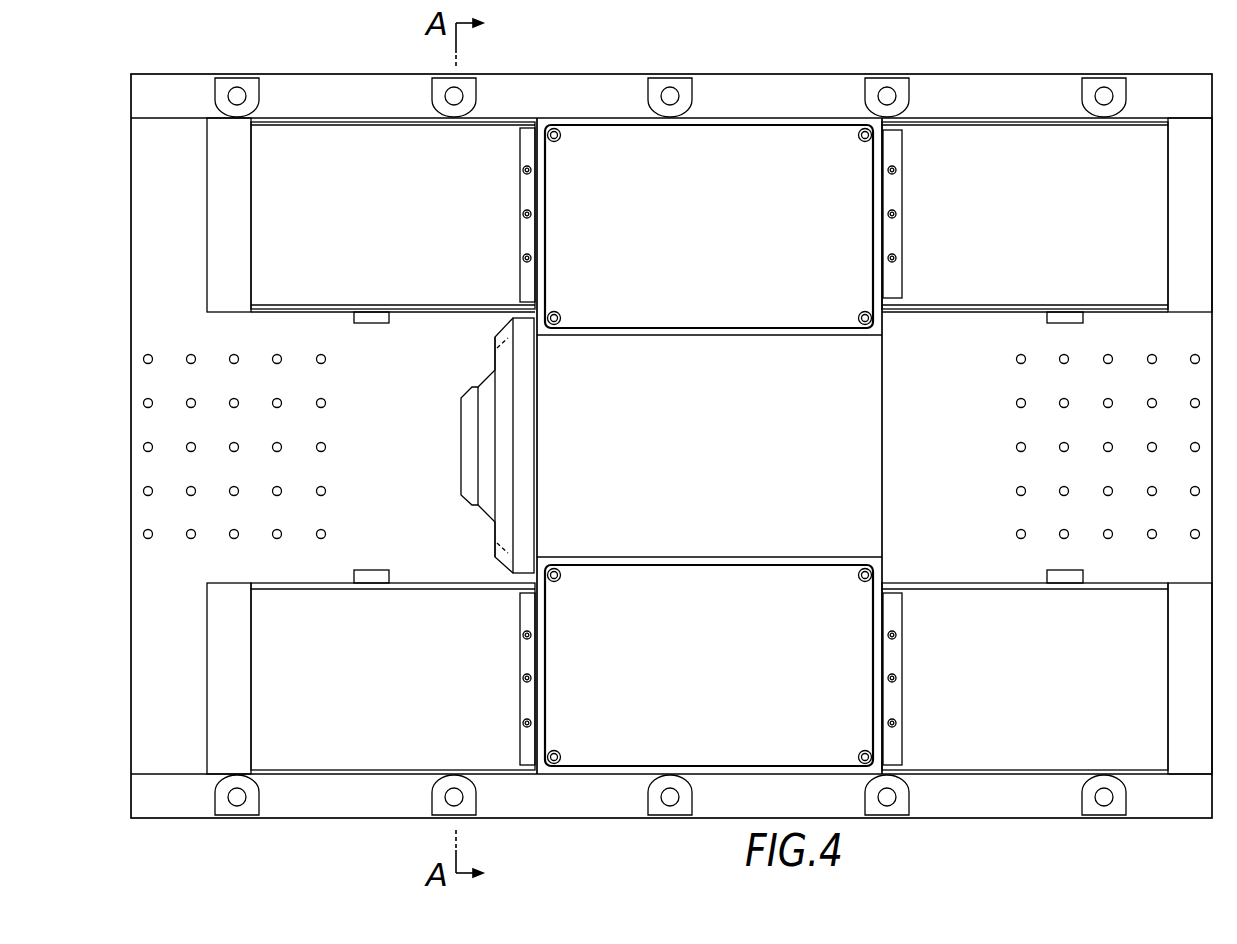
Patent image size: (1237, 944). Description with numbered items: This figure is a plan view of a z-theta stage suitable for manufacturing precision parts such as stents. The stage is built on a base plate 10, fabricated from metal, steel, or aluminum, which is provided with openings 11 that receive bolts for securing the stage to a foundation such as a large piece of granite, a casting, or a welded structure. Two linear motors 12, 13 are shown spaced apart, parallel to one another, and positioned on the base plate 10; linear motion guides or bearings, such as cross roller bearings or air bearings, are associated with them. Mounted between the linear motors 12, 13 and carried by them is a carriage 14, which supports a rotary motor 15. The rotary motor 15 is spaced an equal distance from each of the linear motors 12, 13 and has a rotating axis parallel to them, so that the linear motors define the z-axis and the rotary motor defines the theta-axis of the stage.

The base plate 10 is at (1018, 90).
The openings 11 is at (887, 86).
The linear motor 12 is at (421, 605).
The linear motor 13 is at (362, 143).
The carriage 14 is at (783, 352).
The rotary motor 15 is at (494, 511).